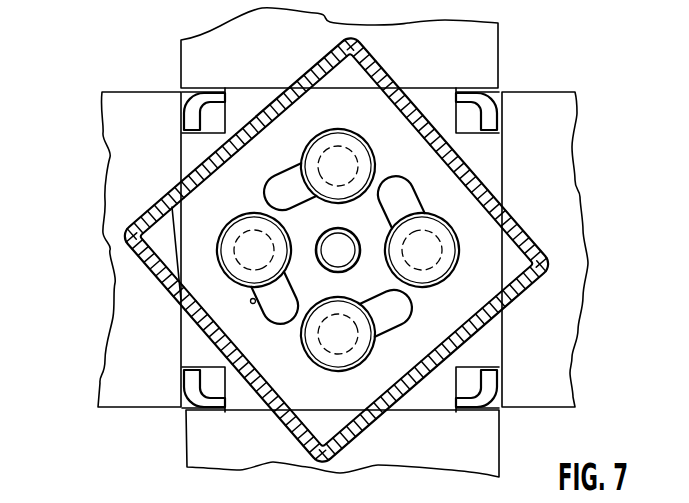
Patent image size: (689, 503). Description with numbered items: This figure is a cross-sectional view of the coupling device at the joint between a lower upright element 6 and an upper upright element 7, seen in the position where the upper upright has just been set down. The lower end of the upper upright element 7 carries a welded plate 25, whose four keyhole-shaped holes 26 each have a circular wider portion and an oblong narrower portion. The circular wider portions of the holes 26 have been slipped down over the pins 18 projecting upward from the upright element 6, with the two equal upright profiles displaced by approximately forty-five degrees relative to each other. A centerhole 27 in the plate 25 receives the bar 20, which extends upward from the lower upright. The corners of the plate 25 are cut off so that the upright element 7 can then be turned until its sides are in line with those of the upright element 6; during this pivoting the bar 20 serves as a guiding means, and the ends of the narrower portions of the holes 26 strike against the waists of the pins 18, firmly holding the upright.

The upright element 6 is at (197, 103).
The upright element 7 is at (175, 198).
The plate 25 is at (200, 242).
The bar 20 is at (338, 250).
The keyhole-shaped hole 26 is at (252, 302).
The centerhole 27 is at (335, 270).
The pin 18 is at (316, 352).